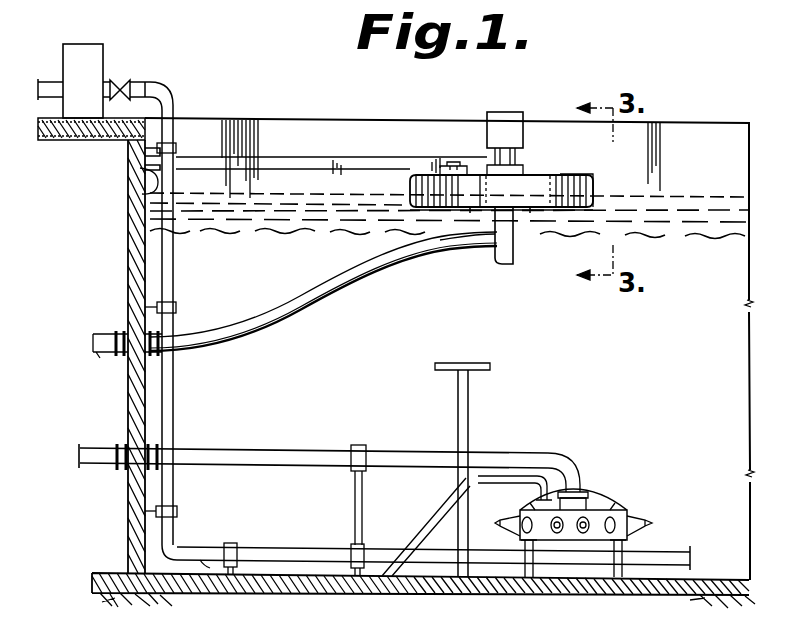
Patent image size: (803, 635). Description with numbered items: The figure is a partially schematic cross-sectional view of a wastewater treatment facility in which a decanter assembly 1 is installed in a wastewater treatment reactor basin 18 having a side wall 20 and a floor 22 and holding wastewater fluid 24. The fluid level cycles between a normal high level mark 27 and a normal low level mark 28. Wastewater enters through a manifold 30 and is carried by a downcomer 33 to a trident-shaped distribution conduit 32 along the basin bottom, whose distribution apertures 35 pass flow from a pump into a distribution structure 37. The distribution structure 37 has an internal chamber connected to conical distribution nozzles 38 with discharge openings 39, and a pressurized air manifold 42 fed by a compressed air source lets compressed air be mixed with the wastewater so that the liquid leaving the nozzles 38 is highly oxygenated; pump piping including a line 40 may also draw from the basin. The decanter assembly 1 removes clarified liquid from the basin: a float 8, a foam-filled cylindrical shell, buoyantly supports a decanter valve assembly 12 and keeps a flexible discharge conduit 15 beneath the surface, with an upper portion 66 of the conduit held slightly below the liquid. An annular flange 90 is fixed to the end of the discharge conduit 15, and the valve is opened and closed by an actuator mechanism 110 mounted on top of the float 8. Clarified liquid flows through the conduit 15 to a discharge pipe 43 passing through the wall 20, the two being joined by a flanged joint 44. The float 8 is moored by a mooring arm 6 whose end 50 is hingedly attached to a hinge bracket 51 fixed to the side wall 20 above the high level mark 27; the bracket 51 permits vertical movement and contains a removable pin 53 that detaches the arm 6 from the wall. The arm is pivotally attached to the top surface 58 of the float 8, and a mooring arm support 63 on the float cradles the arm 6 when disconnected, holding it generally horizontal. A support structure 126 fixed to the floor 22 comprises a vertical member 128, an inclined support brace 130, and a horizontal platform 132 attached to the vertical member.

The decanter assembly 1 is at (453, 112).
The second mooring arm 6 is at (324, 158).
The float 8 is at (598, 188).
The decanter valve assembly 12 is at (538, 232).
The flexible discharge conduit 15 is at (302, 304).
The wastewater treatment reactor basin 18 is at (185, 416).
The side wall 20 is at (128, 522).
The floor 22 is at (300, 573).
The wastewater fluid 24 is at (588, 330).
The normal high level mark 27 is at (705, 183).
The normal low level mark 28 is at (663, 234).
The manifold 30 is at (142, 82).
The distribution conduit 32 is at (250, 546).
The downcomer 33 is at (174, 265).
The distribution apertures 35 is at (208, 562).
The distribution structure 37 is at (592, 505).
The distribution nozzles 38 is at (516, 532).
The discharge openings 39 is at (648, 524).
The line 40 is at (388, 455).
The pressurized air manifold 42 is at (512, 486).
The discharge pipe 43 is at (112, 356).
The flanged joint 44 is at (157, 358).
The end of mooring arm 50 is at (192, 150).
The hinge bracket 51 is at (141, 190).
The removable pin 53 is at (146, 167).
The top surface of float 58 is at (594, 180).
The mooring arm support 63 is at (450, 164).
The upper portion of conduit 66 is at (478, 243).
The annular flange 90 is at (497, 264).
The actuator mechanism 110 is at (520, 112).
The support structure 126 is at (494, 400).
The vertical member 128 is at (470, 436).
The inclined support brace 130 is at (430, 518).
The horizontal platform 132 is at (440, 363).